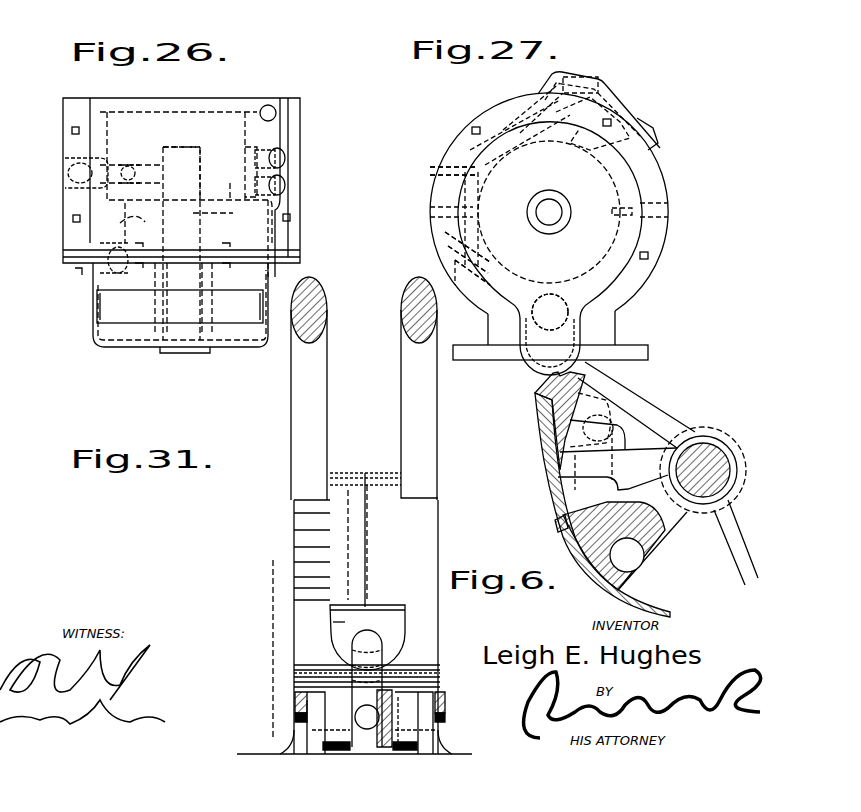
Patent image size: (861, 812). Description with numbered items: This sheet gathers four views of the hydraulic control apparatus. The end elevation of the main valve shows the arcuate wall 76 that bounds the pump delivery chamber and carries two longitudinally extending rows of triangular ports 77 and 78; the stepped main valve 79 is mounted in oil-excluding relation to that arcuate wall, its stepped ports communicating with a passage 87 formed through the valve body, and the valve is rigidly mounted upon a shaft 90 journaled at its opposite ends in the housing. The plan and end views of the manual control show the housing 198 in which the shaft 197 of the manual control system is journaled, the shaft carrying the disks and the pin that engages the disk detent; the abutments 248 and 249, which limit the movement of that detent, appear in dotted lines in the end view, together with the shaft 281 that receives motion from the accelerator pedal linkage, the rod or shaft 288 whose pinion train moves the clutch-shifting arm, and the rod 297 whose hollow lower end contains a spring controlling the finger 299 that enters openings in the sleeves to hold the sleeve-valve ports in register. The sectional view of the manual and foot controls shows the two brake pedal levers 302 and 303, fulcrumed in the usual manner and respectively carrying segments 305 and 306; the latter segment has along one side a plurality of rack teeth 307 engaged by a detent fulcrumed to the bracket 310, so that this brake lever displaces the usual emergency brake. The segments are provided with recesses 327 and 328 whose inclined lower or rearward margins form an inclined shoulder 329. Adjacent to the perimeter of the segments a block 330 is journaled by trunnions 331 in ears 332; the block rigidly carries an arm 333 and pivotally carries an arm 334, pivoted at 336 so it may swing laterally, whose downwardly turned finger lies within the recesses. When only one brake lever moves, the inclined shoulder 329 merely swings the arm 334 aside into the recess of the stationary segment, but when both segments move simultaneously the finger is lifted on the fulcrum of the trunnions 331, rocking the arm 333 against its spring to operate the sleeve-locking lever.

In FIG. 26, the shaft 197 is at (200, 140).
In FIG. 27, the shaft 197 is at (549, 212).
In FIG. 26, the housing 198 is at (285, 127).
In FIG. 27, the housing 198 is at (473, 148).
In FIG. 26, the abutment 248 is at (274, 107).
In FIG. 27, the abutment 248 is at (640, 114).
In FIG. 27, the abutment 249 is at (507, 130).
In FIG. 26, the shaft 281 is at (72, 262).
In FIG. 27, the shaft 281 is at (437, 172).
In FIG. 27, the rod or shaft 288 is at (448, 248).
In FIG. 26, the rod 297 is at (68, 188).
In FIG. 27, the rod 297 is at (466, 290).
In FIG. 26, the finger 299 is at (138, 172).
In FIG. 27, the finger 299 is at (533, 290).
In FIG. 31, the brake pedal lever 302 is at (430, 413).
In FIG. 31, the brake pedal lever 303 is at (300, 385).
In FIG. 31, the segment 305 is at (430, 555).
In FIG. 31, the segment 306 is at (310, 602).
In FIG. 31, the rack teeth 307 is at (305, 530).
In FIG. 31, the bracket 310 is at (273, 570).
In FIG. 31, the recess 327 is at (397, 620).
In FIG. 31, the recess 328 is at (338, 622).
In FIG. 31, the inclined shoulder 329 is at (300, 665).
In FIG. 31, the block 330 is at (410, 723).
In FIG. 31, the trunnion 331 is at (363, 717).
In FIG. 31, the ear 332 is at (315, 737).
In FIG. 31, the arm 333 is at (370, 700).
In FIG. 31, the arm 334 is at (373, 667).
In FIG. 31, the pivot 336 is at (290, 705).
In FIG. 6, the wall 76 is at (570, 553).
In FIG. 6, the triangular ports 77 is at (600, 580).
In FIG. 6, the triangular ports 78 is at (548, 520).
In FIG. 6, the main valve 79 is at (678, 453).
In FIG. 6, the passage 87 is at (550, 450).
In FIG. 6, the shaft 90 is at (704, 455).